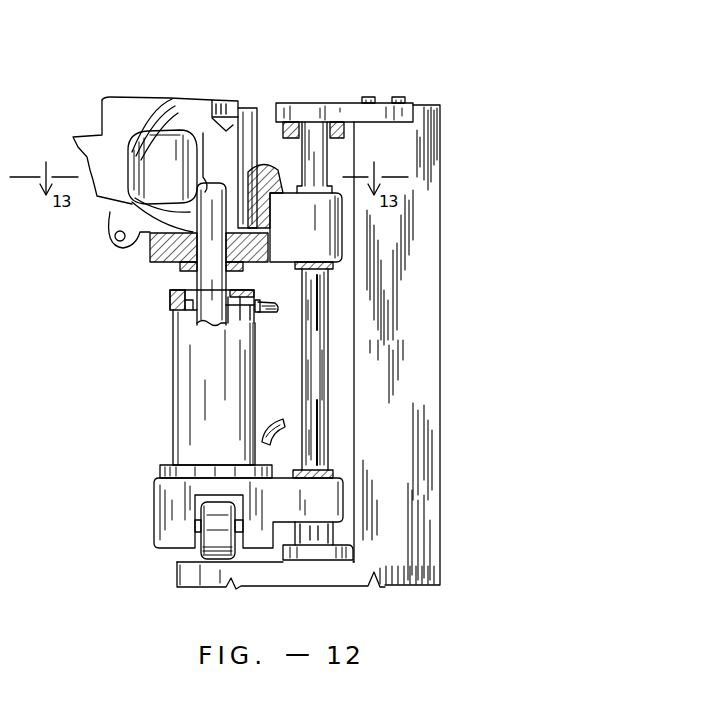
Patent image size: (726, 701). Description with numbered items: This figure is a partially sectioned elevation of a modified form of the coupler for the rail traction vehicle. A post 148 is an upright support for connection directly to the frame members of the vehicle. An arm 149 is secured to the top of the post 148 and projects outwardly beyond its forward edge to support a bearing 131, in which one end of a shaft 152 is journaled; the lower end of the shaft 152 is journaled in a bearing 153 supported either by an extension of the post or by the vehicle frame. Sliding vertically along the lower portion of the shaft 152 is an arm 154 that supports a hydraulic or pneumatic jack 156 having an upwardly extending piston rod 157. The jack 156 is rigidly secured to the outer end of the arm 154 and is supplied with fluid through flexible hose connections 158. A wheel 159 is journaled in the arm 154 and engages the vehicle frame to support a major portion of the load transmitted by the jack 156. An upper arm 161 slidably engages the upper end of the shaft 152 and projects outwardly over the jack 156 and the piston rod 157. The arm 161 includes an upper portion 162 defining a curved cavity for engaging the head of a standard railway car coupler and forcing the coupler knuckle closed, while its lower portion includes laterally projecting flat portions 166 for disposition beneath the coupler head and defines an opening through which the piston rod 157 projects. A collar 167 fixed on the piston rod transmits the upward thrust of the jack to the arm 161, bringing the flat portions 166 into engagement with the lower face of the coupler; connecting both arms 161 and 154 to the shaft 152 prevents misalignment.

The bearing 131 is at (293, 122).
The post 148 is at (432, 305).
The arm 149 is at (340, 108).
The shaft 152 is at (312, 341).
The bearing 153 is at (355, 557).
The arm 154 is at (168, 500).
The jack 156 is at (193, 378).
The piston rod 157 is at (203, 306).
The flexible hose connections 158 is at (270, 304).
The wheel 159 is at (203, 545).
The upper arm 161 is at (163, 250).
The upper portion 162 is at (278, 165).
The flat portions 166 is at (167, 268).
The collar 167 is at (277, 233).